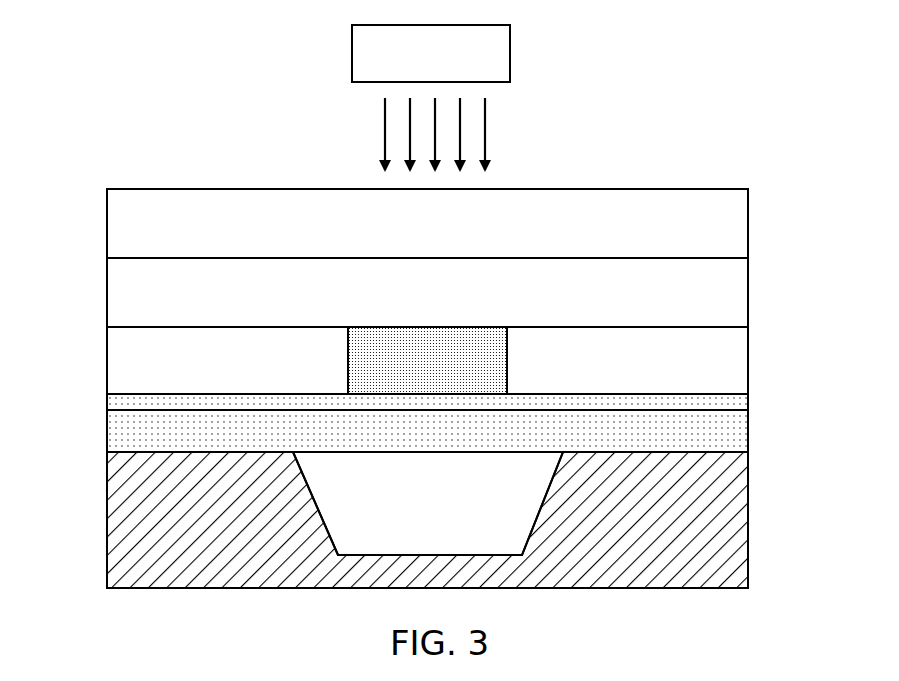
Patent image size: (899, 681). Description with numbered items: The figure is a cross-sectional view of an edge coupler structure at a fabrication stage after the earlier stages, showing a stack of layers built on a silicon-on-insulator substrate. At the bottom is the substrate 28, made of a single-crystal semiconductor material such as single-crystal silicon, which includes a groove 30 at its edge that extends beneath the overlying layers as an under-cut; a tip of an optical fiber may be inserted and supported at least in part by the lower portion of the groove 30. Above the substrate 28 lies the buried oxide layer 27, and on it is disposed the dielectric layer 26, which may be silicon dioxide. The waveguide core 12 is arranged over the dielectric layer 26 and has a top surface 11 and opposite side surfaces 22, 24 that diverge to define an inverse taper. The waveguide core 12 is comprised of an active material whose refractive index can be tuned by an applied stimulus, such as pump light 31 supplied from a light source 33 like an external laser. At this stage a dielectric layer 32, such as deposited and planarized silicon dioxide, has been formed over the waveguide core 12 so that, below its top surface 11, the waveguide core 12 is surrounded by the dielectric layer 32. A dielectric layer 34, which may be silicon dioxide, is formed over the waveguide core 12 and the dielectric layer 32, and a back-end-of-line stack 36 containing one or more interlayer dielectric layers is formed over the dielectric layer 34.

The top surface 11 is at (400, 327).
The waveguide core 12 is at (455, 352).
The side surface 22 is at (348, 368).
The side surface 24 is at (507, 372).
The dielectric layer 26 is at (705, 407).
The buried oxide layer 27 is at (137, 433).
The substrate 28 is at (137, 528).
The groove 30 is at (441, 513).
The pump light 31 is at (485, 136).
The dielectric layer 32 is at (143, 356).
The light source 33 is at (483, 47).
The dielectric layer 34 is at (718, 292).
The back-end-of-line stack 36 is at (712, 236).